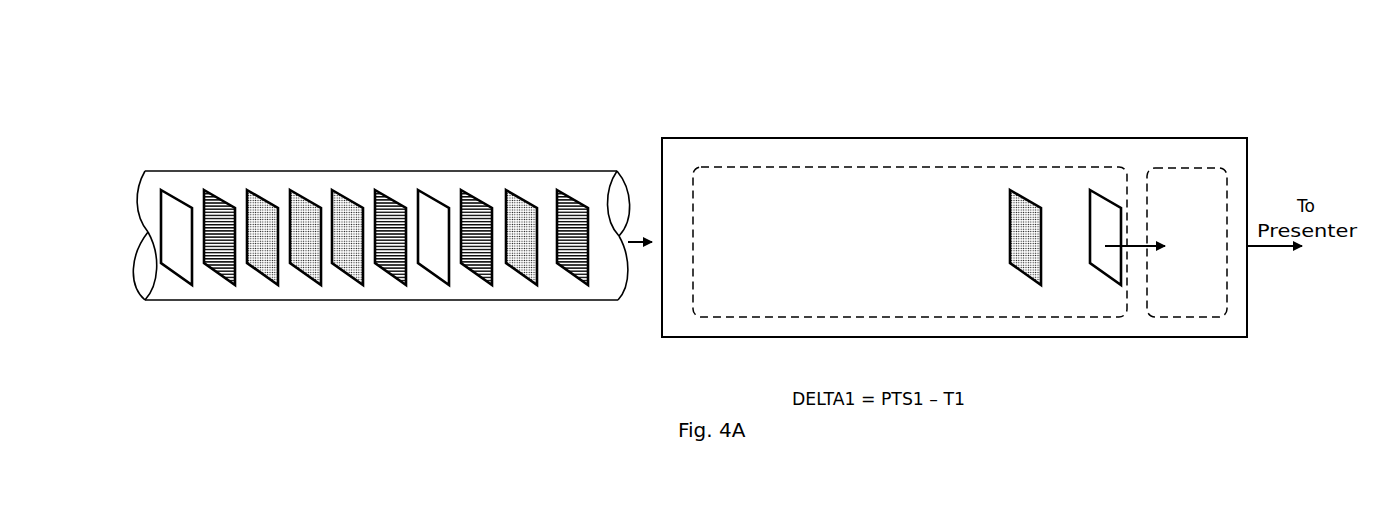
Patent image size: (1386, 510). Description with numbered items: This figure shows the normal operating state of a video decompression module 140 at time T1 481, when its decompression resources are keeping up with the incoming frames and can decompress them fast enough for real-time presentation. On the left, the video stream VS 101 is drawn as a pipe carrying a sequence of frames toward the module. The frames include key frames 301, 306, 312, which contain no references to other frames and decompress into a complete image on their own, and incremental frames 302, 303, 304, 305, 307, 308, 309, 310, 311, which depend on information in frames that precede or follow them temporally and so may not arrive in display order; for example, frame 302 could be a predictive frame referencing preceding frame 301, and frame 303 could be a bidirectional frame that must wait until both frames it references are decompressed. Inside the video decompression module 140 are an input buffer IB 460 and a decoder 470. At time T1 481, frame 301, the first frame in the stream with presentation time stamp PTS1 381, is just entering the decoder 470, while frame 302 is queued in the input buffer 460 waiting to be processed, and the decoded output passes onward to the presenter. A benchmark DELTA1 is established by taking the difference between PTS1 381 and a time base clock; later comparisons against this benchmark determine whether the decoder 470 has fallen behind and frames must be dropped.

The video stream VS 101 is at (285, 171).
The video decompression module 140 is at (766, 138).
The input buffer 460 is at (708, 167).
The decoder 470 is at (1147, 285).
The presentation time stamp PTS1 381 is at (1118, 166).
The time T1 481 is at (1176, 108).
The key frame 301 is at (1098, 273).
The incremental frame 302 is at (1017, 267).
The incremental frame 303 is at (565, 266).
The incremental frame 304 is at (514, 266).
The incremental frame 305 is at (469, 266).
The key frame 306 is at (426, 266).
The incremental frame 307 is at (383, 266).
The incremental frame 308 is at (340, 266).
The incremental frame 309 is at (298, 266).
The incremental frame 310 is at (255, 266).
The incremental frame 311 is at (212, 266).
The key frame 312 is at (169, 266).